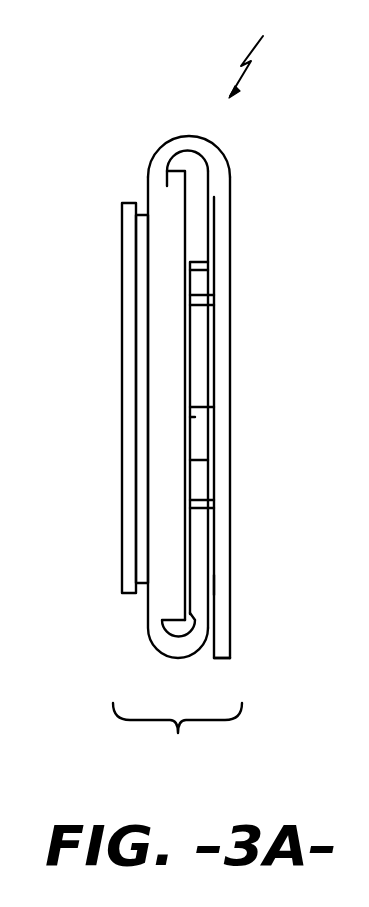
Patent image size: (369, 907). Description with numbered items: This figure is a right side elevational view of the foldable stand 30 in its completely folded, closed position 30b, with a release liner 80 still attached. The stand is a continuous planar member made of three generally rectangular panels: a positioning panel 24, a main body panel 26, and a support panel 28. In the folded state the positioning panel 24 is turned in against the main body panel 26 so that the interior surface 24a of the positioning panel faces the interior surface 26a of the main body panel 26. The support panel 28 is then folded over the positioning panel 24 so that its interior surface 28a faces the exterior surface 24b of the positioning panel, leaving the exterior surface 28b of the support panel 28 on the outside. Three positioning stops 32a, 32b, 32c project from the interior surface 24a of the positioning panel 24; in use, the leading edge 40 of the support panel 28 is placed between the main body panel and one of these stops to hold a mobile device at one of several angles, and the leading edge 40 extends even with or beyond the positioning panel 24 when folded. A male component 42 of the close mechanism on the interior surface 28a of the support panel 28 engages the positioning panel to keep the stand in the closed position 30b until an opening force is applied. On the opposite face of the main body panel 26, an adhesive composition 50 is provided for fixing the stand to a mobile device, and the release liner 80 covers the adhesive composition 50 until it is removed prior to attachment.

The foldable stand 30 is at (261, 51).
The closed position 30b is at (177, 735).
The main body panel 26 is at (166, 187).
The interior surface of the main body panel 26a is at (189, 227).
The positioning panel 24 is at (205, 272).
The interior surface of the positioning panel 24a is at (186, 281).
The exterior surface of the positioning panel 24b is at (208, 465).
The support panel 28 is at (215, 386).
The interior surface of the support panel 28a is at (210, 199).
The exterior surface of the support panel 28b is at (233, 357).
The first positioning stop 32a is at (198, 511).
The second positioning stop 32b is at (198, 413).
The third positioning stop 32c is at (196, 303).
The leading edge of the support panel 40 is at (221, 652).
The male component of the fastener 42 is at (216, 586).
The adhesive composition 50 is at (142, 466).
The release liner 80 is at (129, 360).